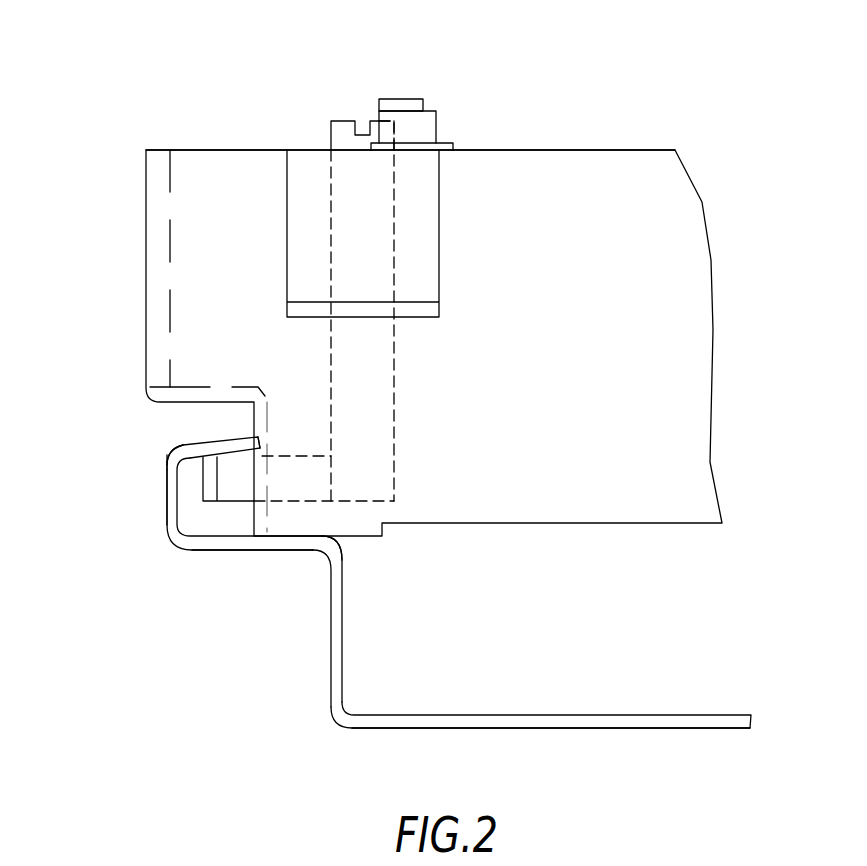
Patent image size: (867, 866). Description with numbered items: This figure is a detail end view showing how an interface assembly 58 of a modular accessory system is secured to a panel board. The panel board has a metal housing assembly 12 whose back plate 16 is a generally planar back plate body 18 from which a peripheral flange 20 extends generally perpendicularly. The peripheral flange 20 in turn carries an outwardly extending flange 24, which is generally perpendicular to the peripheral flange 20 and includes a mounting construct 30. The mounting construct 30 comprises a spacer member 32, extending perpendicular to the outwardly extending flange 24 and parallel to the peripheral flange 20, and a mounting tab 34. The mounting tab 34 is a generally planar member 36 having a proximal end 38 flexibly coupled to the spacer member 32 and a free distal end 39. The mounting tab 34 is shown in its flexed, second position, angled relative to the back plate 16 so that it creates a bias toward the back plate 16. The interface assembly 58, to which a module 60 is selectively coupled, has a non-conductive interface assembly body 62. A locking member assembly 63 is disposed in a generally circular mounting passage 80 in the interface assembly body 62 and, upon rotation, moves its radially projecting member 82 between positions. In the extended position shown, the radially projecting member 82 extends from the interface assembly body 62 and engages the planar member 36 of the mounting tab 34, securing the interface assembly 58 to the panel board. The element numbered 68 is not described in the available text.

The housing assembly 12 is at (678, 713).
The back plate 16 is at (623, 728).
The back plate body 18 is at (507, 728).
The peripheral flange 20 is at (330, 617).
The outwardly extending flange 24 is at (248, 551).
The mounting construct 30 is at (84, 491).
The spacer member 32 is at (167, 492).
The mounting tab 34 is at (182, 445).
The planar member 36 is at (209, 414).
The proximal end 38 is at (170, 460).
The distal end 39 is at (257, 435).
The interface assembly 58 is at (512, 177).
The module 60 is at (575, 162).
The interface assembly body 62 is at (690, 273).
The locking member assembly 63 is at (395, 133).
The inner corner of wall 68 is at (351, 538).
The mounting passage 80 is at (403, 99).
The radially projecting member 82 is at (203, 486).